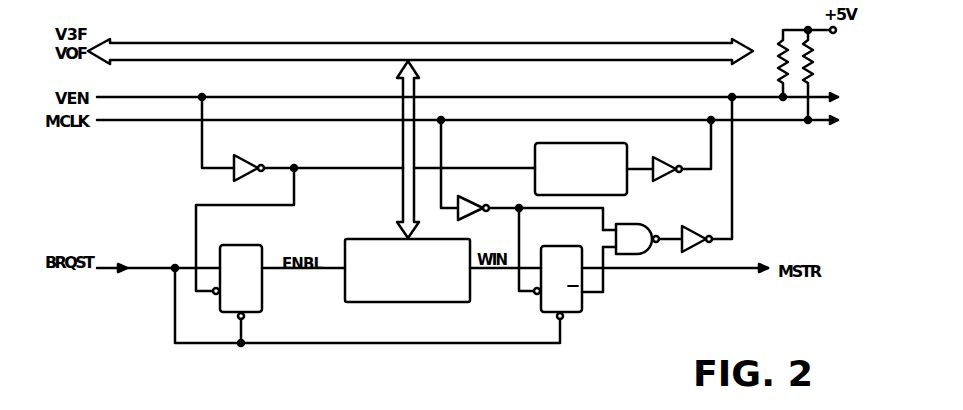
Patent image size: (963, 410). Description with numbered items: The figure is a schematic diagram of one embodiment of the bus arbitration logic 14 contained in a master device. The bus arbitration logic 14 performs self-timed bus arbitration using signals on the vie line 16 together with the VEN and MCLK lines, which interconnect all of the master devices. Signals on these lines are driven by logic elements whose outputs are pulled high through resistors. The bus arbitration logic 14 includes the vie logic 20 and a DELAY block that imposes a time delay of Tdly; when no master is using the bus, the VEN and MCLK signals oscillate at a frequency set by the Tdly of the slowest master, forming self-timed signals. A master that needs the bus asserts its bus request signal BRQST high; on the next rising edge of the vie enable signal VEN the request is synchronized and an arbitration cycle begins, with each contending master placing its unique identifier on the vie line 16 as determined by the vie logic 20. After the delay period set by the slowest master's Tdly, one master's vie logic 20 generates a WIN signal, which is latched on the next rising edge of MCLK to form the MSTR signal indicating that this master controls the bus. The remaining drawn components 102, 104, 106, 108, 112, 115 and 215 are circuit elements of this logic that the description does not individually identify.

The vie line 16 is at (420, 124).
The pull-up resistors / NAND gate 102 is at (719, 129).
The bus arbitration logic 14 is at (320, 254).
The inverter 104 is at (368, 139).
The delay element 106 is at (553, 163).
The inverter 108 is at (522, 205).
The flip-flop 112 is at (651, 297).
The inverter 115 is at (669, 150).
The inverter 215 is at (695, 174).
The vie logic 20 is at (443, 286).